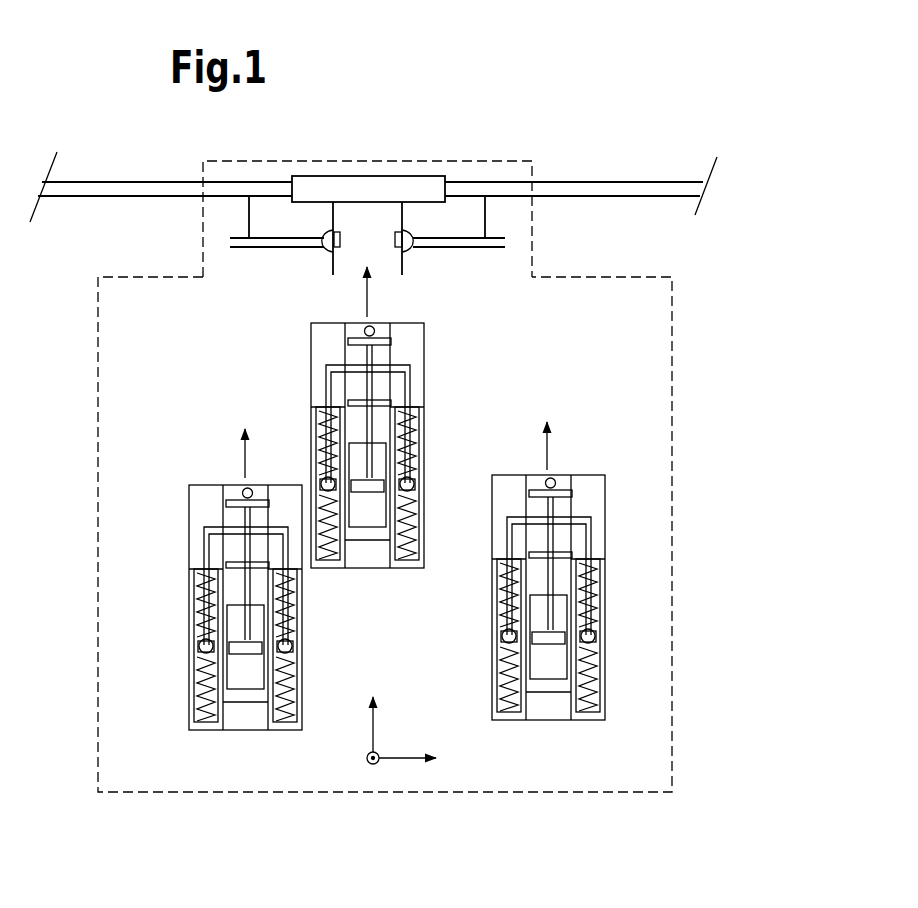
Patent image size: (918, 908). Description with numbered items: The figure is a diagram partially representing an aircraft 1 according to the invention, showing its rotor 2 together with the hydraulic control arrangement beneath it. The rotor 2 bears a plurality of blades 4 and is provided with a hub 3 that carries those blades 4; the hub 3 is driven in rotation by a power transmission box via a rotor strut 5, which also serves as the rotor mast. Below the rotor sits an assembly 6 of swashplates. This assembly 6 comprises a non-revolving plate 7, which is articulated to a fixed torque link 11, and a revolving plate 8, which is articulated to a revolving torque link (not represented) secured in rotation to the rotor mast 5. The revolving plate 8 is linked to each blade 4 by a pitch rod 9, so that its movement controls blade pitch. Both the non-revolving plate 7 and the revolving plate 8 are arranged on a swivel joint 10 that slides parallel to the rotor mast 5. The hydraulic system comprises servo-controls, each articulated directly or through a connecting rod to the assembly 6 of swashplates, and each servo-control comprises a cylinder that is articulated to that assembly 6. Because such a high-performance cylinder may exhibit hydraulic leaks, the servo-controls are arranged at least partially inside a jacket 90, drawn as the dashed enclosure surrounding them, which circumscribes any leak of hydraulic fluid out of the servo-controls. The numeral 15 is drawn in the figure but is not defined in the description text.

The aircraft 1 is at (754, 376).
The rotor 2 is at (690, 243).
The hub 3 is at (430, 176).
The blade 4 is at (645, 182).
The rotor strut 5 is at (320, 258).
The set of swashplates 6 is at (246, 259).
The non-revolving plate 7 is at (295, 250).
The revolving plate 8 is at (490, 232).
The pitch rod 9 is at (249, 214).
The swivel joint 10 is at (410, 250).
The fixed torque link 11 is at (500, 252).
The spring damper unit 15 is at (647, 610).
The jacket 90 is at (672, 723).